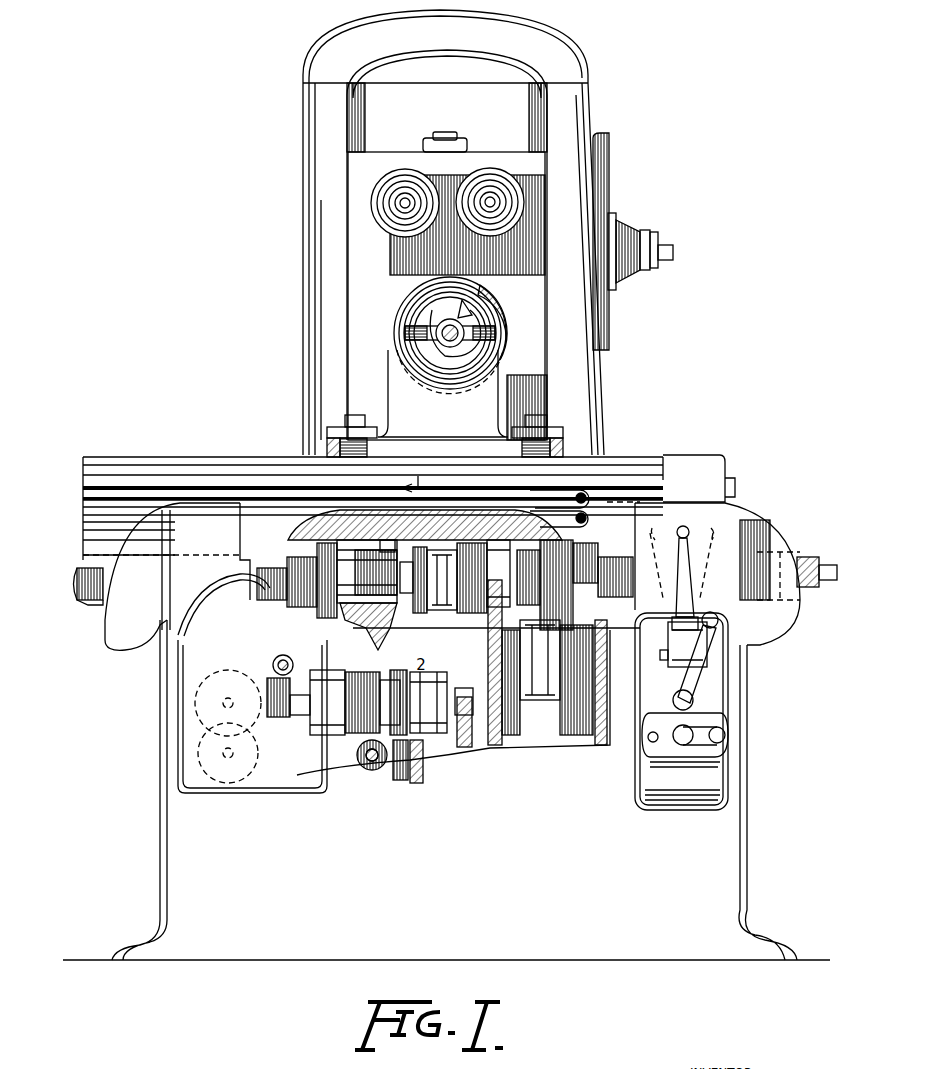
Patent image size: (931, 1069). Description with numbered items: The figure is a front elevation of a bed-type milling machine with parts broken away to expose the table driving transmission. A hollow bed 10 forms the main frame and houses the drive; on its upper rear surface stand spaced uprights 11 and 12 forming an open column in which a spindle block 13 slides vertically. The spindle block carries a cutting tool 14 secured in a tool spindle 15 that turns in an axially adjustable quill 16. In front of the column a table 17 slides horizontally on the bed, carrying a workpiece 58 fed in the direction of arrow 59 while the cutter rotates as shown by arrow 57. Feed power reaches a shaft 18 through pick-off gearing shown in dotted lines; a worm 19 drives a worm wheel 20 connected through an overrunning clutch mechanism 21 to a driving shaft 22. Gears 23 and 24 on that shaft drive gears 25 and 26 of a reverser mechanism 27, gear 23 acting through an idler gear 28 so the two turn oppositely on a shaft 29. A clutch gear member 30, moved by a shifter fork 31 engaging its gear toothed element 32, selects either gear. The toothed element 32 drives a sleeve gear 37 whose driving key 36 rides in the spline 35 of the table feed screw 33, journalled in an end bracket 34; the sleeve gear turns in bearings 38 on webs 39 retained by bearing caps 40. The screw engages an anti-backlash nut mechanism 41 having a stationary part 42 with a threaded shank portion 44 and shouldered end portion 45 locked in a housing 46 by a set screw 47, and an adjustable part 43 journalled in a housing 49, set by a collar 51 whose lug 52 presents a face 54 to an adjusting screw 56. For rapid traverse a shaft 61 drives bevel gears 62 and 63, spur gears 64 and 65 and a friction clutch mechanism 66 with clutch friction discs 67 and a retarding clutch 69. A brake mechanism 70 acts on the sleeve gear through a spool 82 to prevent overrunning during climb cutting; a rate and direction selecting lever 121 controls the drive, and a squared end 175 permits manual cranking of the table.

The bed 10 is at (175, 820).
The upright 11 is at (320, 138).
The upright 12 is at (580, 108).
The spindle block 13 is at (360, 290).
The cutting tool 14 is at (437, 330).
The tool spindle 15 is at (478, 328).
The quill 16 is at (430, 290).
The table 17 is at (255, 470).
The shaft 18 is at (250, 700).
The worm 19 is at (272, 665).
The worm wheel 20 is at (320, 735).
The overrunning clutch mechanism 21 is at (310, 720).
The driving shaft 22 is at (605, 710).
The gear 23 is at (505, 740).
The gear 24 is at (595, 740).
The gear 25 is at (510, 658).
The gear 26 is at (700, 650).
The reverser mechanism 27 is at (578, 712).
The idler gear 28 is at (515, 700).
The shaft 29 is at (668, 665).
The clutch gear member 30 is at (655, 598).
The shifter fork 31 is at (542, 695).
The gear toothed element 32 is at (560, 730).
The table feed screw 33 is at (90, 606).
The end bracket 34 is at (705, 457).
The spline 35 is at (88, 568).
The driving key 36 is at (475, 615).
The sleeve gear 37 is at (556, 448).
The bearing 38 is at (565, 540).
The web 39 is at (505, 672).
The bearing cap 40 is at (606, 465).
The anti-backlash nut mechanism 41 is at (340, 610).
The stationary part 42 is at (360, 605).
The adjustable part 43 is at (325, 605).
The threaded shank portion 44 is at (376, 630).
The shouldered end portion 45 is at (335, 520).
The housing 46 is at (345, 515).
The set screw 47 is at (385, 530).
The housing 49 is at (240, 540).
The collar 51 is at (238, 573).
The lug 52 is at (268, 600).
The face 54 is at (322, 618).
The adjusting screw 56 is at (298, 600).
The arrow 57 is at (462, 306).
The workpiece 58 is at (395, 383).
The arrow 59 is at (452, 441).
The shaft 61 is at (372, 770).
The bevel gear 62 is at (400, 780).
The bevel gear 63 is at (416, 783).
The spur gear 64 is at (400, 762).
The spur gear 65 is at (405, 610).
The rapid traverse friction clutch mechanism 66 is at (360, 770).
The clutch friction discs 67 is at (430, 735).
The retarding clutch 69 is at (352, 745).
The brake mechanism 70 is at (424, 612).
The spool 82 is at (430, 600).
The rate and direction selecting lever 121 is at (685, 527).
The squared end 175 is at (825, 565).